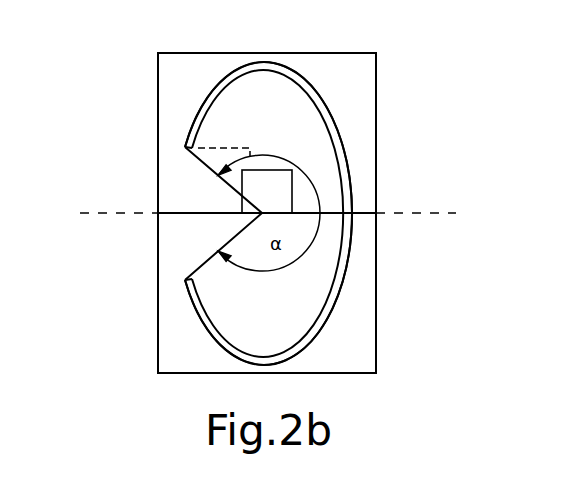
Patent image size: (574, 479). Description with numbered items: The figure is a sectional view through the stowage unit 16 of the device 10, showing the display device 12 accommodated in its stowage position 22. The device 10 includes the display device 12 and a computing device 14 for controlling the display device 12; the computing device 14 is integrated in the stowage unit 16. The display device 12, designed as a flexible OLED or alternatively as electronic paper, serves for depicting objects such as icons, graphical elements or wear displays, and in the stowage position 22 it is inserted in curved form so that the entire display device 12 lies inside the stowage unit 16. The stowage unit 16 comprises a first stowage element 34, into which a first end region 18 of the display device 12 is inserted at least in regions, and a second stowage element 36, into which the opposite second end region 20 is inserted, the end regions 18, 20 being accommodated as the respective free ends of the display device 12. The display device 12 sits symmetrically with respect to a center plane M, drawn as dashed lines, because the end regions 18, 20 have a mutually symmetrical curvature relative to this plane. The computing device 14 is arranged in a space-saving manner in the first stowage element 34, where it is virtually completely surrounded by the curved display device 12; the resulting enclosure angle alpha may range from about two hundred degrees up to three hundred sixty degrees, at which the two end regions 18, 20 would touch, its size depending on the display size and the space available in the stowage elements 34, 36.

The device 10 is at (423, 351).
The display device 12 is at (340, 142).
The computing device 14 is at (282, 200).
The stowage unit 16 is at (132, 357).
The first end region 18 is at (219, 117).
The second end region 20 is at (226, 322).
The stowage position 22 is at (402, 246).
The first stowage element 34 is at (147, 105).
The second stowage element 36 is at (146, 264).
The center plane M is at (430, 213).